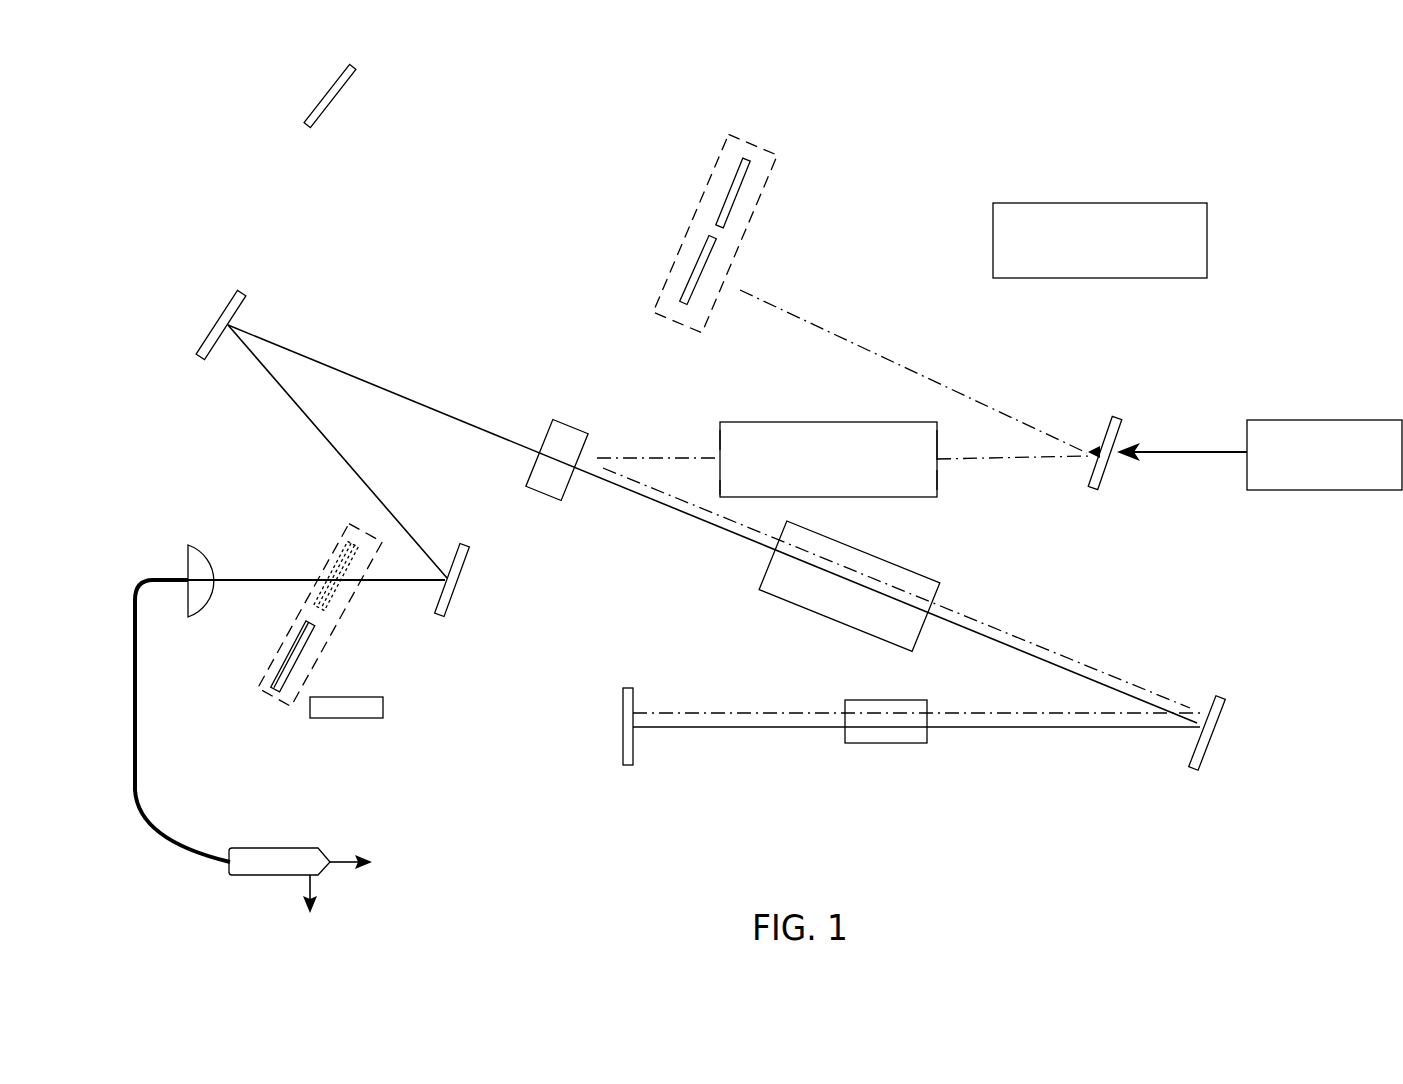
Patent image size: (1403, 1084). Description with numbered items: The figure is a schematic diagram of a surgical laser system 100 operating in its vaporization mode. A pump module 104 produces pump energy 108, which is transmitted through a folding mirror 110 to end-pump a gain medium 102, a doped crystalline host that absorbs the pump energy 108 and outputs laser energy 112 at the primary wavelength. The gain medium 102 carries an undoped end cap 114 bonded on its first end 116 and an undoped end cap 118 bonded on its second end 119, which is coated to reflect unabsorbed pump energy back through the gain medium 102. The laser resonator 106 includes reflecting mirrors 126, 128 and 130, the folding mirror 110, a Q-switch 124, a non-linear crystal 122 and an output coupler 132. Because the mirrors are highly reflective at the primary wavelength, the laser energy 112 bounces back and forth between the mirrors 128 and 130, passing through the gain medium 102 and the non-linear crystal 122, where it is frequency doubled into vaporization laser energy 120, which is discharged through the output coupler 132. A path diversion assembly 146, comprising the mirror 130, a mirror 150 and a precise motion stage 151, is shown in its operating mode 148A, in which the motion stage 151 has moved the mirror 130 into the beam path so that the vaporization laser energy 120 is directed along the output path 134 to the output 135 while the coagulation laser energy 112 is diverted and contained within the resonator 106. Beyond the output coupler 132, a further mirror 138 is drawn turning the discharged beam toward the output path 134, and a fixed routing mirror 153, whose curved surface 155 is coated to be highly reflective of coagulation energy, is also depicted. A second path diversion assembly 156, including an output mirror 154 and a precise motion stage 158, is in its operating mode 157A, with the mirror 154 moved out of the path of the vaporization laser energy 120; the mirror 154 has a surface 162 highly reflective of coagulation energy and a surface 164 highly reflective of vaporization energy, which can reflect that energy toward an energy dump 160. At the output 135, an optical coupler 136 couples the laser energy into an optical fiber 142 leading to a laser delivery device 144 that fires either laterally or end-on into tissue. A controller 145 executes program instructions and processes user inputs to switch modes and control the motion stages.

The surgical laser system 100 is at (1186, 107).
The gain medium 102 is at (830, 422).
The pump module 104 is at (1302, 420).
The laser resonator 106 is at (1185, 584).
The pump energy 108 is at (1176, 456).
The folding mirror 110 is at (1116, 424).
The laser energy 112 is at (907, 366).
The undoped end cap 114 is at (937, 488).
The first end 116 is at (937, 425).
The undoped end cap 118 is at (720, 440).
The second end 119 is at (728, 497).
The vaporization laser energy 120 is at (378, 388).
The non-linear crystal 122 is at (877, 745).
The Q-switch 124 is at (815, 620).
The reflecting mirror 126 is at (1222, 712).
The reflecting mirror 128 is at (622, 694).
The mirror 130 is at (690, 280).
The output coupler 132 is at (538, 500).
The output path 134 is at (238, 525).
The output 135 is at (168, 550).
The optical coupler 136 is at (193, 545).
The turning mirror 138 is at (222, 306).
The optical fiber 142 is at (148, 807).
The laser delivery device 144 is at (272, 848).
The controller 145 is at (1030, 203).
The path diversion assembly 146 is at (795, 215).
The operating mode 148A is at (798, 120).
The mirror 150 is at (752, 172).
The precise motion stage 151 is at (718, 166).
The routing mirror 153 is at (328, 90).
The output mirror 154 is at (337, 535).
The surface 155 is at (345, 88).
The path diversion assembly 156 is at (250, 702).
The operating mode 157A is at (343, 651).
The precise motion stage 158 is at (333, 622).
The energy dump 160 is at (358, 715).
The surface 162 is at (293, 625).
The surface 164 is at (282, 698).